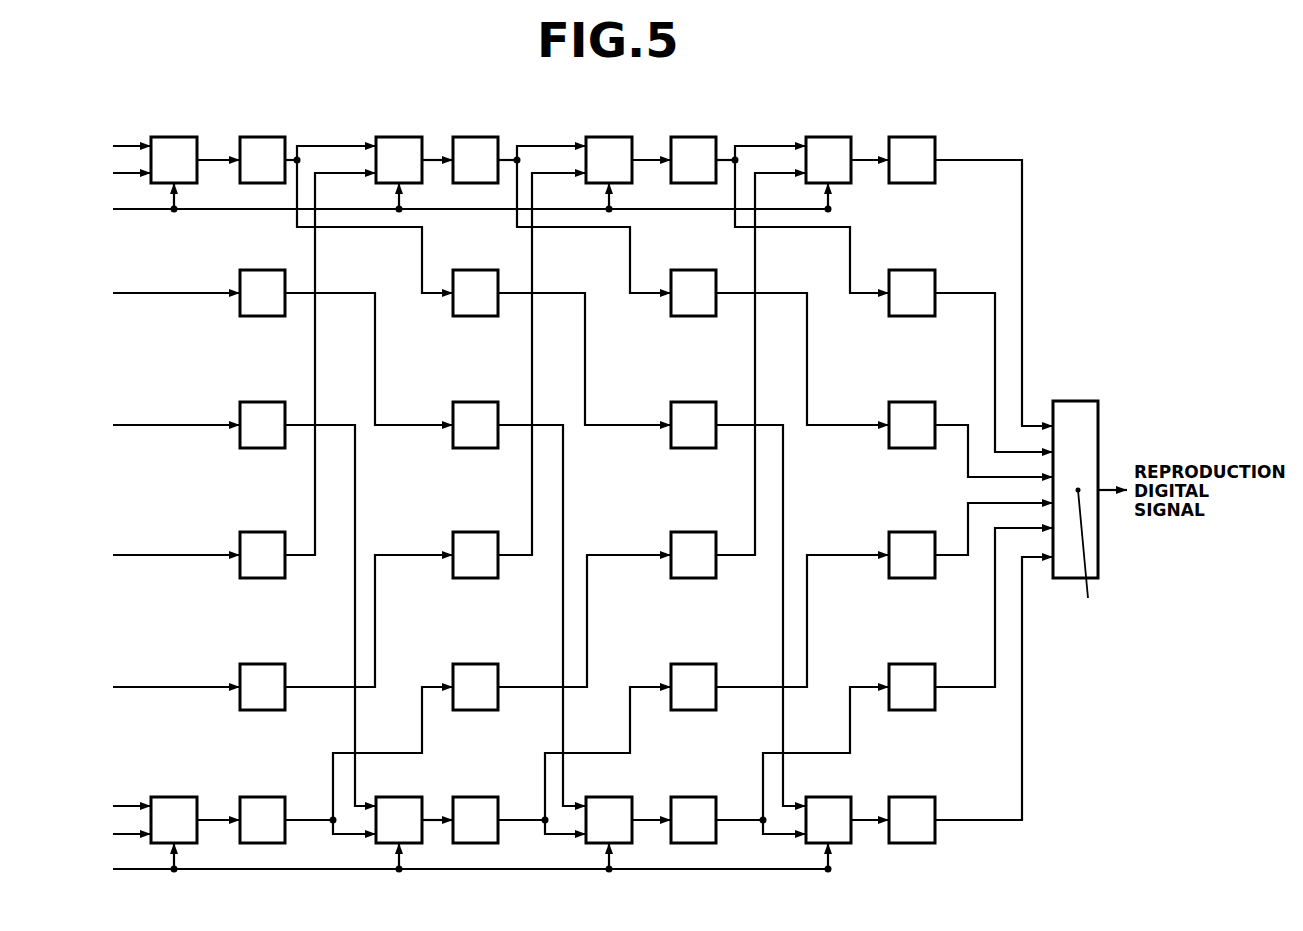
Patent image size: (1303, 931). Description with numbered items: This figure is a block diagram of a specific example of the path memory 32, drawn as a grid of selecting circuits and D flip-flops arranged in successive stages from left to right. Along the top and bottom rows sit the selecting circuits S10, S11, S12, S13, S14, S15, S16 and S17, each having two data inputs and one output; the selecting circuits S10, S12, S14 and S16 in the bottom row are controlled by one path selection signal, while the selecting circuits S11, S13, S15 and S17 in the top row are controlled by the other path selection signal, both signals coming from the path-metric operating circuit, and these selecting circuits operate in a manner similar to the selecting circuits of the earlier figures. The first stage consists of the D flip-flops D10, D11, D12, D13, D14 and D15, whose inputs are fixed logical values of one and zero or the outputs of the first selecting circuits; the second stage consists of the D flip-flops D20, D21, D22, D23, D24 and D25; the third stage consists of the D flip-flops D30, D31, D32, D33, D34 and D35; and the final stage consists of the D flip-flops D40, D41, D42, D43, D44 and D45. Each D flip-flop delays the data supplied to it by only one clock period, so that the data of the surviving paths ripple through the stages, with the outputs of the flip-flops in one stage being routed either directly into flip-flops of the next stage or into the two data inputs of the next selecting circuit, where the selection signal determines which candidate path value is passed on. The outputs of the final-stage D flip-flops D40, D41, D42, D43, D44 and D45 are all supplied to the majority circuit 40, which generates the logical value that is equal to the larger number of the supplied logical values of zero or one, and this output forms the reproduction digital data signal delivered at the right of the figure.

The path memory 32 is at (521, 112).
The majority circuit 40 is at (1087, 401).
The selecting circuit S10 is at (174, 820).
The selecting circuit S11 is at (174, 160).
The selecting circuit S12 is at (399, 820).
The selecting circuit S13 is at (399, 160).
The selecting circuit S14 is at (609, 820).
The selecting circuit S15 is at (609, 160).
The selecting circuit S16 is at (828, 820).
The selecting circuit S17 is at (828, 160).
The D flip-flop D10 is at (262, 820).
The D flip-flop D11 is at (262, 687).
The D flip-flop D12 is at (262, 555).
The D flip-flop D13 is at (262, 425).
The D flip-flop D14 is at (262, 293).
The D flip-flop D15 is at (262, 160).
The D flip-flop D20 is at (475, 820).
The D flip-flop D21 is at (475, 687).
The D flip-flop D22 is at (475, 555).
The D flip-flop D23 is at (475, 425).
The D flip-flop D24 is at (475, 293).
The D flip-flop D25 is at (475, 160).
The D flip-flop D30 is at (693, 820).
The D flip-flop D31 is at (693, 687).
The D flip-flop D32 is at (693, 555).
The D flip-flop D33 is at (693, 425).
The D flip-flop D34 is at (693, 293).
The D flip-flop D35 is at (693, 160).
The D flip-flop D40 is at (912, 820).
The D flip-flop D41 is at (912, 687).
The D flip-flop D42 is at (912, 555).
The D flip-flop D43 is at (912, 425).
The D flip-flop D44 is at (912, 293).
The D flip-flop D45 is at (912, 160).